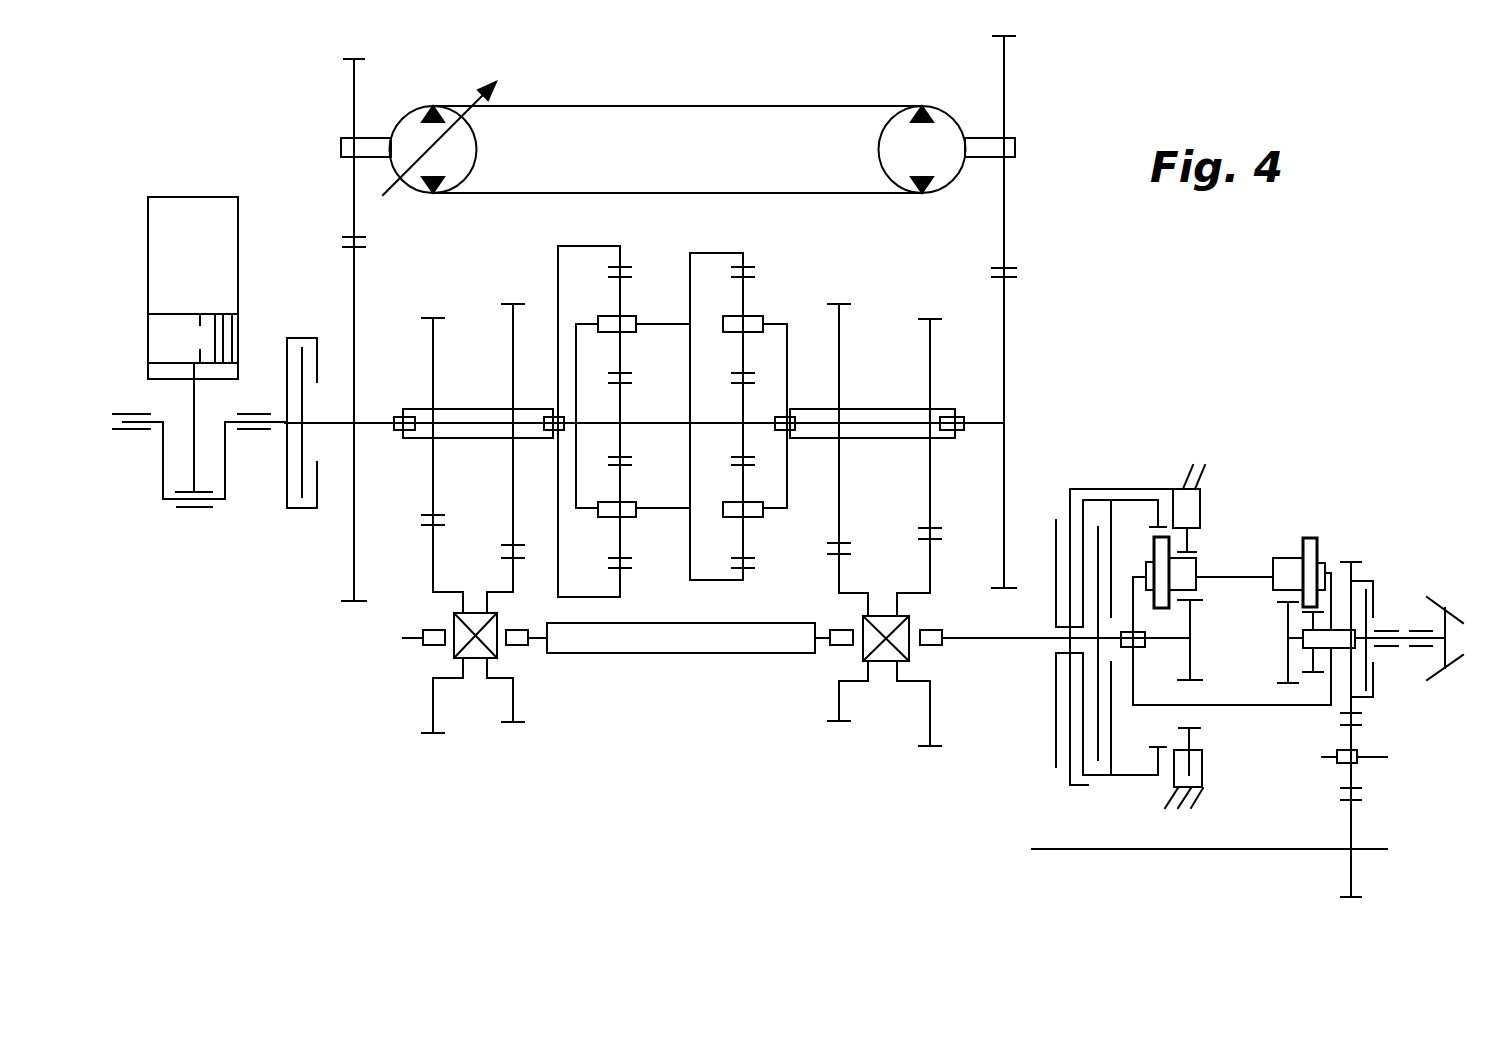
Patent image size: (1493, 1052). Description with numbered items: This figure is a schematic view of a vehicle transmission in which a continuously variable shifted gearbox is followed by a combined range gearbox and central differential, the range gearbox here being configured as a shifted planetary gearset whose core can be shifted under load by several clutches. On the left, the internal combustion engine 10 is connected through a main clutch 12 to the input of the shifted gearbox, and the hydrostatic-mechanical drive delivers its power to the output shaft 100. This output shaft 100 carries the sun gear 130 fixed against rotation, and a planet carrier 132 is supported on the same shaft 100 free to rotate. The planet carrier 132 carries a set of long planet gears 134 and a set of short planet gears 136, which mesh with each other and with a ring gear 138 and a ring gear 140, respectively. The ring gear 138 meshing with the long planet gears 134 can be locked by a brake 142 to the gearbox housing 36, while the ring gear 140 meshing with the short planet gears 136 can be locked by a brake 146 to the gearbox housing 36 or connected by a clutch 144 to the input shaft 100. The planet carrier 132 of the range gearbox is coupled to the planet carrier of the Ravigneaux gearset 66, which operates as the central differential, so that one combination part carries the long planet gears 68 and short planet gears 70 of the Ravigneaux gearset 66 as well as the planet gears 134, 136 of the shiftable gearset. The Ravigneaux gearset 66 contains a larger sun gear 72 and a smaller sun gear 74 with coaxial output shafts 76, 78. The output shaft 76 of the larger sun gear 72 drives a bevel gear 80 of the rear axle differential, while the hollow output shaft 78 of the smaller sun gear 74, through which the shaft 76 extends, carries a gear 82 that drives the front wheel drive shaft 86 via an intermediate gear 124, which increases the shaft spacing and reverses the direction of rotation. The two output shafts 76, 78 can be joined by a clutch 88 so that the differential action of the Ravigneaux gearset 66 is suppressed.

The internal combustion engine 10 is at (200, 210).
The main clutch 12 is at (310, 500).
The gearbox housing 36 is at (1195, 488).
The Ravigneaux gearset 66 is at (1333, 541).
The long planet gears 68 is at (1270, 588).
The short planet gears 70 is at (1310, 537).
The larger sun gear 72 is at (1284, 660).
The smaller sun gear 74 is at (1311, 674).
The output shaft 76 is at (1409, 650).
The output shaft 78 is at (1342, 650).
The bevel gear 80 is at (1443, 675).
The gear 82 is at (1355, 577).
The front wheel drive shaft 86 is at (1165, 851).
The clutch 88 is at (1370, 690).
The output shaft 100 is at (1010, 640).
The intermediate gear 124 is at (1355, 778).
The sun gear 130 is at (1193, 655).
The planet carrier 132 is at (1268, 576).
The long planet gears 134 is at (1184, 566).
The short planet gears 136 is at (1151, 550).
The ring gear 138 is at (1187, 554).
The ring gear 140 is at (1150, 499).
The brake 142 is at (1176, 776).
The clutch 144 is at (1092, 767).
The brake 146 is at (1057, 750).